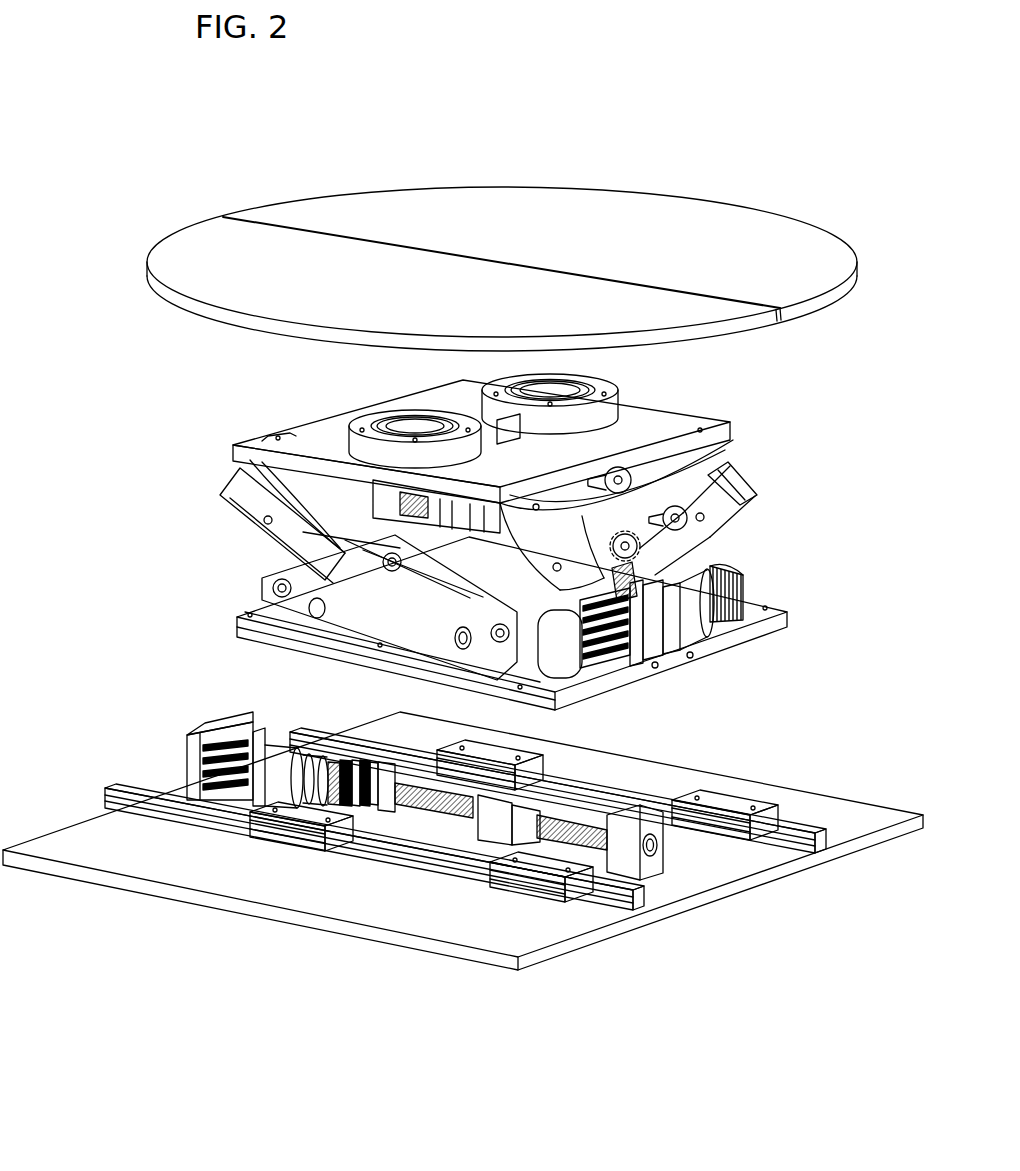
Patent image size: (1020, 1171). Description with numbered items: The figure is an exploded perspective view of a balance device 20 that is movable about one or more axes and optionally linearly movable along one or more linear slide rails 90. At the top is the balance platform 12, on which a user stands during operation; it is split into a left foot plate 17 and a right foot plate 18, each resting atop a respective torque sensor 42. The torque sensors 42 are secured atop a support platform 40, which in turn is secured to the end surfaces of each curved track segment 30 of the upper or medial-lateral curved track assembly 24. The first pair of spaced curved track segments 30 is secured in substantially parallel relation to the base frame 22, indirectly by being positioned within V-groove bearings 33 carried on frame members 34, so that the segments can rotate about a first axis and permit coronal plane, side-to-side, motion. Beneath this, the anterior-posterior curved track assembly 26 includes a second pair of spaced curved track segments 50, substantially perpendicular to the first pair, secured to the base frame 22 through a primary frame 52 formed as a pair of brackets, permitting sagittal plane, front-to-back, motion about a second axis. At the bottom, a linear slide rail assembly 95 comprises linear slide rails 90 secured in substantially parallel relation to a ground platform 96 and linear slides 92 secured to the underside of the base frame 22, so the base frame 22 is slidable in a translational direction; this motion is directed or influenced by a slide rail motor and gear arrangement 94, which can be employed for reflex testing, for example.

The balance platform 12 is at (455, 205).
The left foot plate 17 is at (223, 256).
The right foot plate 18 is at (686, 215).
The balance device 20 is at (846, 141).
The base frame 22 is at (350, 660).
The medial-lateral curved track assembly 24 is at (731, 452).
The anterior-posterior curved track assembly 26 is at (241, 550).
The curved track segments 30 is at (240, 472).
The V-groove bearings 33 is at (690, 518).
The frame members 34 is at (340, 527).
The support platform 40 is at (250, 438).
The torque sensors 42 is at (480, 394).
The curved track segments 50 is at (250, 508).
The primary frame 52 is at (323, 583).
The linear slide rails 90 is at (163, 827).
The linear slides 92 is at (548, 752).
The slide rail motor and gear arrangement 94 is at (167, 738).
The linear slide rail assembly 95 is at (752, 922).
The ground platform 96 is at (263, 903).